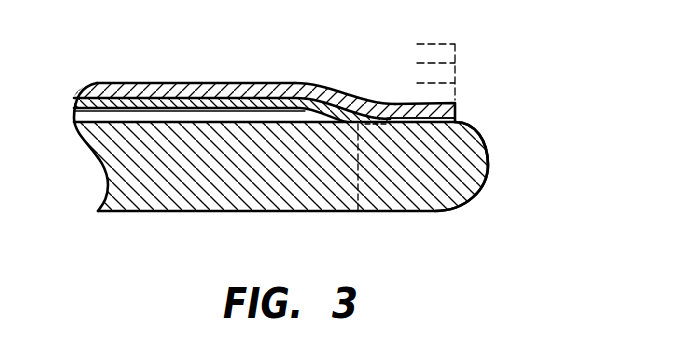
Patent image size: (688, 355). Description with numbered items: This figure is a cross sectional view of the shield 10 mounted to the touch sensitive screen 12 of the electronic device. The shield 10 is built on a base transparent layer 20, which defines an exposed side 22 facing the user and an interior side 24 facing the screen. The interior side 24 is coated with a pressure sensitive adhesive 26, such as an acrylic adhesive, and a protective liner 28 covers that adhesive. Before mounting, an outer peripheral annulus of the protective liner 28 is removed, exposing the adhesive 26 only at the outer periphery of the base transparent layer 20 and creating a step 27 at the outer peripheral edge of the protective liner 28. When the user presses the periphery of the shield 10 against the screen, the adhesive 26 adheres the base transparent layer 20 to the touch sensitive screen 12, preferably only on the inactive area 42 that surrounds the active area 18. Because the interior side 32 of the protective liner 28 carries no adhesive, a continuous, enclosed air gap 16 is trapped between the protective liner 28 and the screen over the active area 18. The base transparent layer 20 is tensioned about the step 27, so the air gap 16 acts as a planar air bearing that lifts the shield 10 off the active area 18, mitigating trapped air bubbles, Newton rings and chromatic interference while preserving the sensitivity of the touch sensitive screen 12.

The shield 10 is at (299, 63).
The touch sensitive screen 12 is at (324, 152).
The air gap 16 is at (115, 115).
The active area 18 is at (145, 183).
The base transparent layer 20 is at (235, 84).
The exposed side 22 is at (318, 83).
The interior side 24 is at (292, 81).
The pressure sensitive adhesive 26 is at (376, 98).
The step 27 is at (357, 93).
The protective liner 28 is at (148, 112).
The interior side of the protective liner 32 is at (150, 114).
The inactive area 42 is at (408, 180).